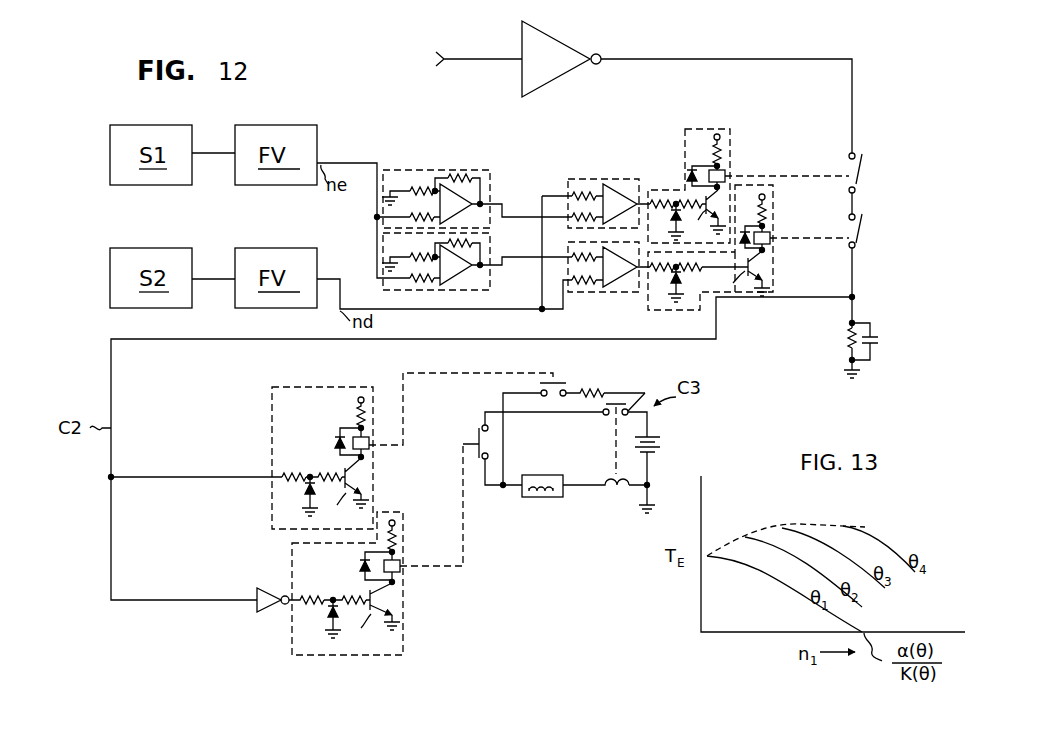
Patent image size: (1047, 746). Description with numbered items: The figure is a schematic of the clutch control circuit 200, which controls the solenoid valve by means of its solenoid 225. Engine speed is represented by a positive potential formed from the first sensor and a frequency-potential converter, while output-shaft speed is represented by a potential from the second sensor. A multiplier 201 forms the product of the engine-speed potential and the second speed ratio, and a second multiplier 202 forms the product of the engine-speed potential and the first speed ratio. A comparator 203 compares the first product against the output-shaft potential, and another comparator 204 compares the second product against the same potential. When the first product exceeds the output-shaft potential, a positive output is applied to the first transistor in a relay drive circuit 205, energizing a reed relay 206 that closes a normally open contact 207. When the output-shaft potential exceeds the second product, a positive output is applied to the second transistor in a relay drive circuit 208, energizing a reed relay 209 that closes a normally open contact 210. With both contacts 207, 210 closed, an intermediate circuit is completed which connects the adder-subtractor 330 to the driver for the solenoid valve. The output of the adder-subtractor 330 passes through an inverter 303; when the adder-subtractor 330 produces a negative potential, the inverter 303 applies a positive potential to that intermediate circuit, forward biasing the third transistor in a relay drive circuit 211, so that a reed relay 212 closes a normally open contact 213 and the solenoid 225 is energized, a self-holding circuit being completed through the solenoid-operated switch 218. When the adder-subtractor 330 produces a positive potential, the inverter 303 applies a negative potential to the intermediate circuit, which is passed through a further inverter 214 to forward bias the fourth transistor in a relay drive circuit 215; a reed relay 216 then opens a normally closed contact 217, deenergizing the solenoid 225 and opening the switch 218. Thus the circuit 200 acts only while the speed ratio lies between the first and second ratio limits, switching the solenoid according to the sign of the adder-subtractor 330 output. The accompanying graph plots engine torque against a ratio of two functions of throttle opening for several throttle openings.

The clutch control circuit 200 is at (392, 129).
The multiplier 201 is at (413, 170).
The multiplier 202 is at (489, 282).
The comparator 203 is at (600, 180).
The comparator 204 is at (595, 292).
The relay drive circuit 205 is at (700, 130).
The reed relay 206 is at (727, 176).
The normally open contact 207 is at (864, 178).
The relay drive circuit 208 is at (773, 256).
The reed relay 209 is at (770, 232).
The normally open contact 210 is at (864, 233).
The relay drive circuit 211 is at (323, 392).
The reed relay 212 is at (374, 450).
The normally open contact 213 is at (563, 382).
The inverter 214 is at (271, 592).
The relay drive circuit 215 is at (357, 656).
The reed relay 216 is at (402, 560).
The normally closed contact 217 is at (478, 438).
The solenoid-operated switch 218 is at (611, 434).
The solenoid 225 is at (544, 465).
The inverter 303 is at (560, 50).
The adder-subtractor 330 is at (450, 51).